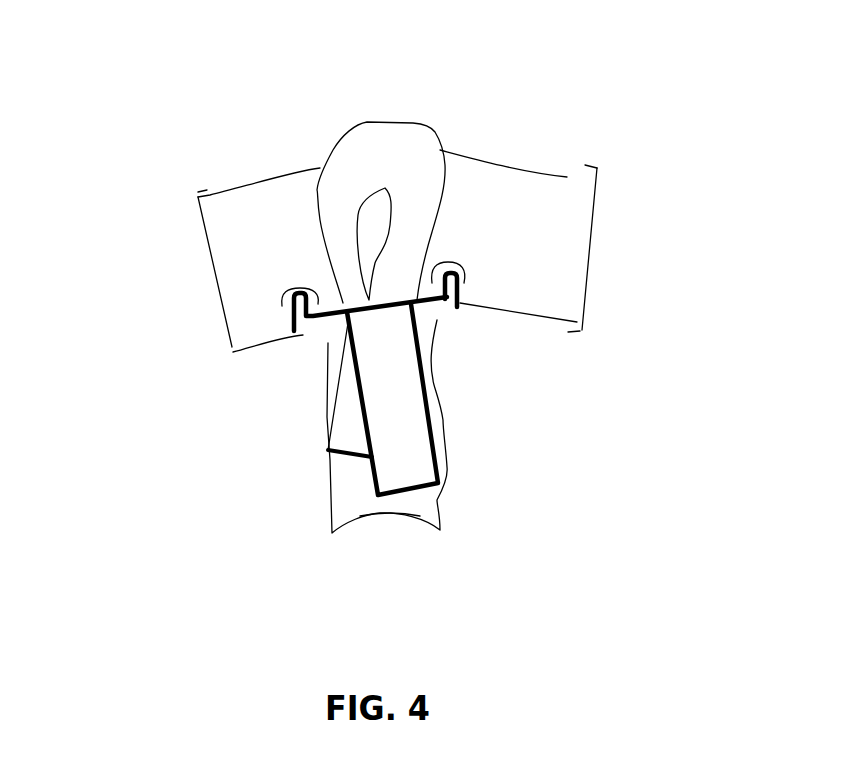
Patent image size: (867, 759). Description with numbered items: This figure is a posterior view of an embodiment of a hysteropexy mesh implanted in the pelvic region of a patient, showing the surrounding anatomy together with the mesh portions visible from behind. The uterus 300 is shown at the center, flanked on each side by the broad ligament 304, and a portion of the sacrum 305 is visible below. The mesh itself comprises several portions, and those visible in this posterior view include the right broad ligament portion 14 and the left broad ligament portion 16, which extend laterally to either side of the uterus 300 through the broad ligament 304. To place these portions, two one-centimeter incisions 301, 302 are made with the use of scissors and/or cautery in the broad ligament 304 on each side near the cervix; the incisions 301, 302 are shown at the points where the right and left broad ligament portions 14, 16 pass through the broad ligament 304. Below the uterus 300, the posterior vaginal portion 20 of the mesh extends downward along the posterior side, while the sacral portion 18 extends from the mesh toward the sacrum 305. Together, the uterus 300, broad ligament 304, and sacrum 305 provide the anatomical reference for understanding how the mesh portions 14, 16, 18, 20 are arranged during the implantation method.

The uterus 300 is at (430, 121).
The broad ligament 304 is at (213, 277).
The incision 302 is at (237, 342).
The incision 301 is at (461, 273).
The sacrum 305 is at (407, 515).
The right broad ligament portion 14 is at (308, 338).
The left broad ligament portion 16 is at (447, 316).
The sacral portion 18 is at (327, 440).
The posterior vaginal portion 20 is at (350, 503).